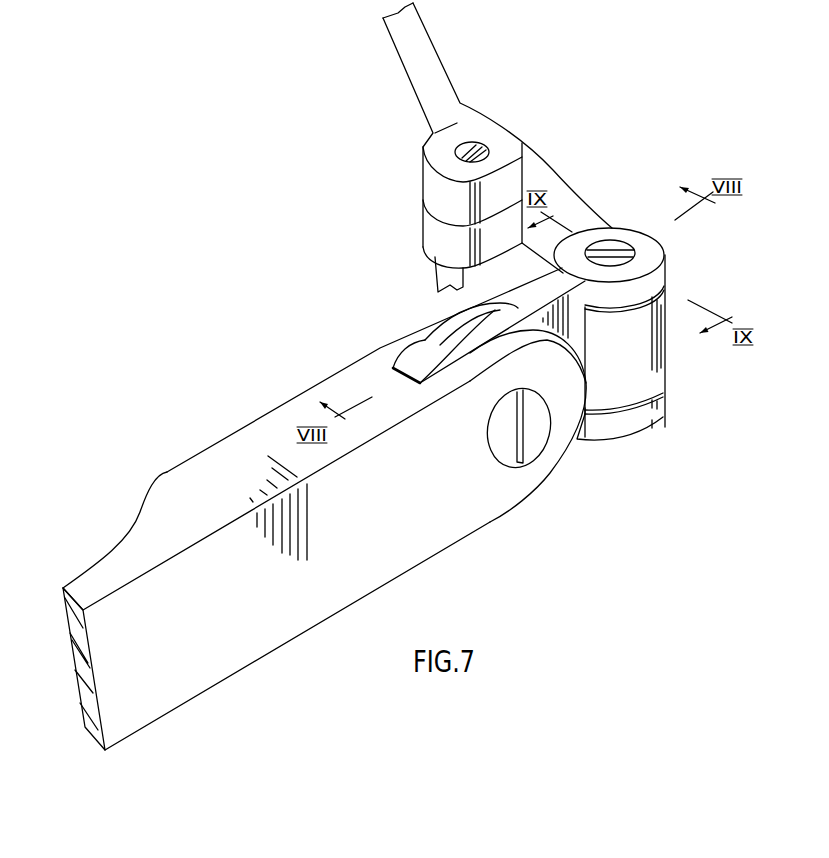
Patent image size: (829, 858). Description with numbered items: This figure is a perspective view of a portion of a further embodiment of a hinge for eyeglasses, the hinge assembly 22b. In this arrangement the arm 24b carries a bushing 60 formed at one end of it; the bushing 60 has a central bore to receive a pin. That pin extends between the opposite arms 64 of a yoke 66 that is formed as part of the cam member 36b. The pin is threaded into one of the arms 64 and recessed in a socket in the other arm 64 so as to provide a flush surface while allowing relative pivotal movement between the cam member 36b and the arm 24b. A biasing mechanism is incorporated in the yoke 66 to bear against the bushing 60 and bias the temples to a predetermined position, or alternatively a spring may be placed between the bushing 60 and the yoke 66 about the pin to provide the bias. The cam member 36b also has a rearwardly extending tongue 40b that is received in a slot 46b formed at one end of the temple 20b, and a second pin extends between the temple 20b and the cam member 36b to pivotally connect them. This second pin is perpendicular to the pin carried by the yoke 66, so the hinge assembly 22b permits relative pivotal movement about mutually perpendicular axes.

The temple 20b is at (206, 497).
The hinge assembly 22b is at (648, 366).
The arm 24b is at (562, 175).
The cam member 36b is at (468, 310).
The tongue 40b is at (577, 438).
The slot 46b is at (415, 372).
The bushing 60 is at (650, 378).
The arms 64 is at (661, 278).
The yoke 66 is at (593, 396).